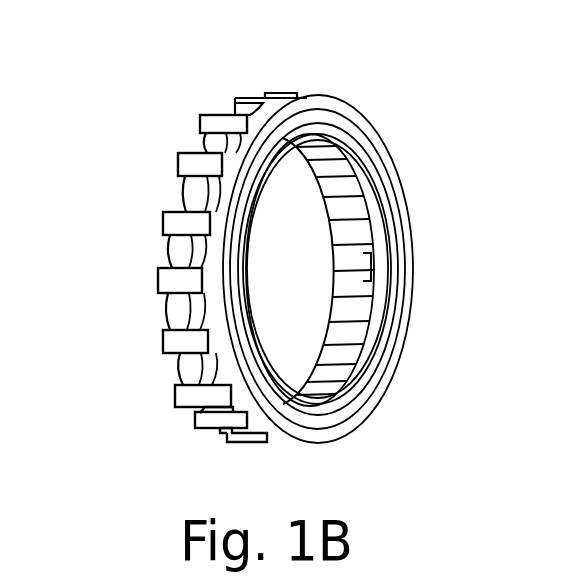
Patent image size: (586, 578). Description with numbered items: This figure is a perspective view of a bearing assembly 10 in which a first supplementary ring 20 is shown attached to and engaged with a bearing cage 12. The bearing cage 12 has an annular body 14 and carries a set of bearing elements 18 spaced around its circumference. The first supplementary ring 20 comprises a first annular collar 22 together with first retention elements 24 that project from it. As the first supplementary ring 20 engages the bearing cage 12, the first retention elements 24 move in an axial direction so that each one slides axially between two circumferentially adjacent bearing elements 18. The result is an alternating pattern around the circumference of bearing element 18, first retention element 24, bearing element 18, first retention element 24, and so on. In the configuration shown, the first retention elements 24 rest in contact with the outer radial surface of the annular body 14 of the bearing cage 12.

The bearing assembly 10 is at (118, 103).
The bearing cage 12 is at (172, 190).
The annular body 14 is at (368, 350).
The bearing elements 18 is at (173, 250).
The first supplementary ring 20 is at (386, 111).
The first annular collar 22 is at (407, 183).
The first retention elements 24 is at (213, 113).